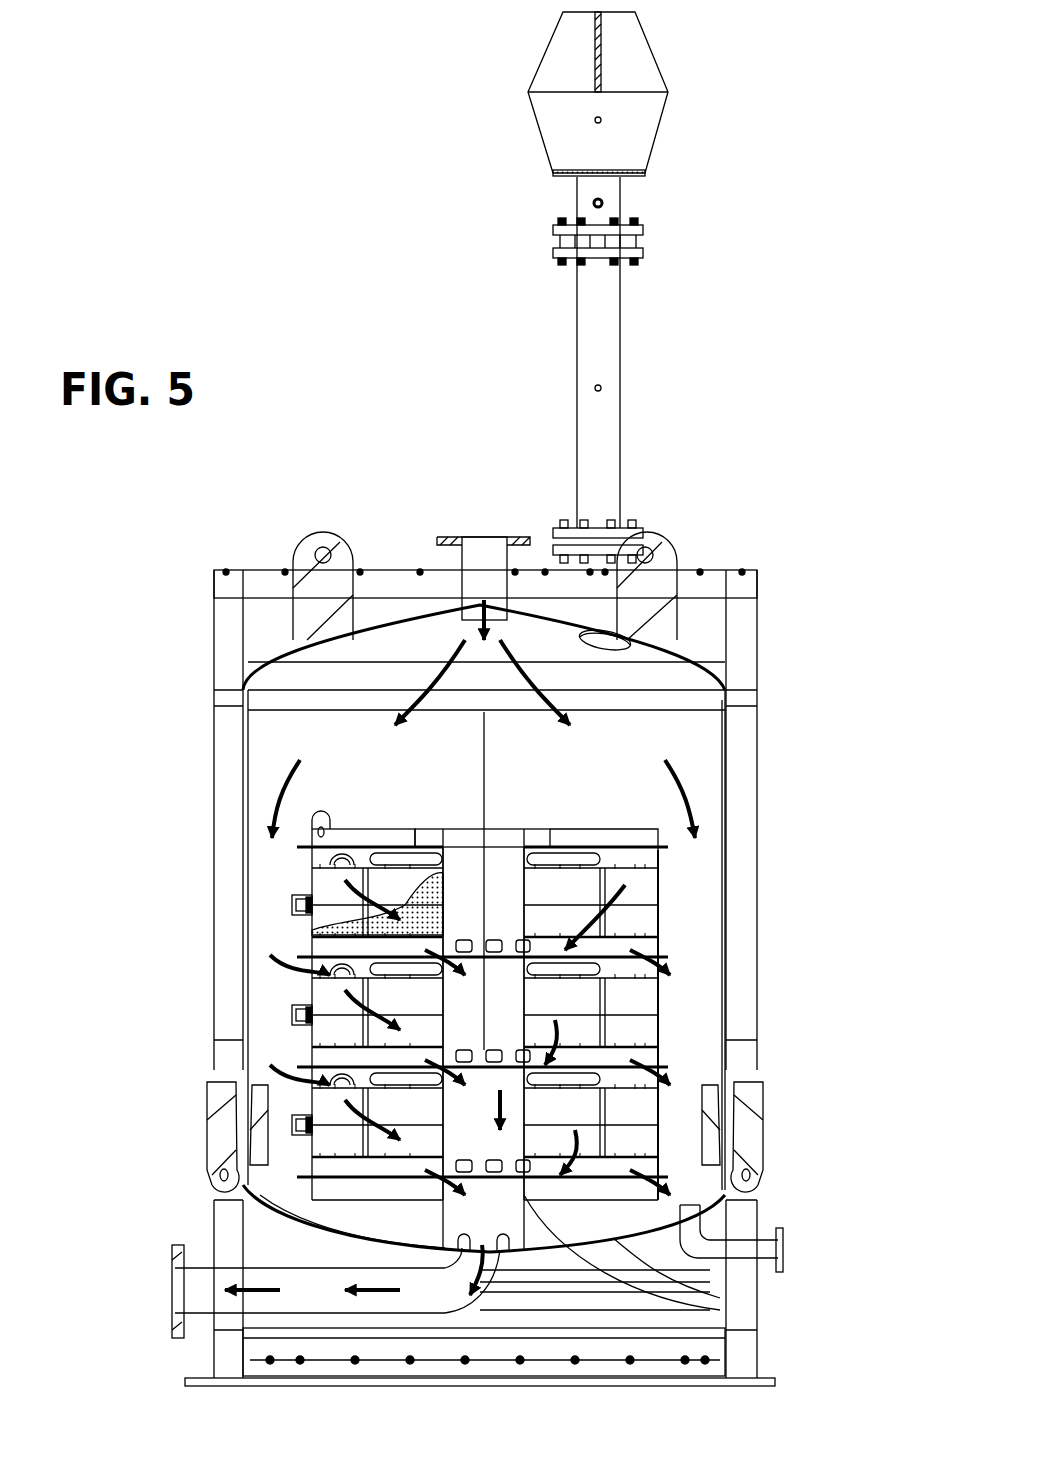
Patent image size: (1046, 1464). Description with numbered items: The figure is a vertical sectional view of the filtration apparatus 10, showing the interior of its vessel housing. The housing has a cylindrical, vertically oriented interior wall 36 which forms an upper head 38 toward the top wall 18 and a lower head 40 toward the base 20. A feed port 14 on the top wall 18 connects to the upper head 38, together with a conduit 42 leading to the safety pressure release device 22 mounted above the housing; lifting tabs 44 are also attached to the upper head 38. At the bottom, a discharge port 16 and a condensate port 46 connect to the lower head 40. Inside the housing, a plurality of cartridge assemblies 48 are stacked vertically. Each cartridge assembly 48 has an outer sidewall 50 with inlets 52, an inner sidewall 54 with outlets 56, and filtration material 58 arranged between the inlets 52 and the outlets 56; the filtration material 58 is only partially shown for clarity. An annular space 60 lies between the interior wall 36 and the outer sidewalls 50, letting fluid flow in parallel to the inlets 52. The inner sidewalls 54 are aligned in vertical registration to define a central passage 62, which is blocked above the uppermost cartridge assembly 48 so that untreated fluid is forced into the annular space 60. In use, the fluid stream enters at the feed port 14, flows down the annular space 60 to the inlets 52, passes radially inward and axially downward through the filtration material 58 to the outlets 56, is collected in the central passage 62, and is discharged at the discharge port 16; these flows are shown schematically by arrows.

The filtration apparatus 10 is at (135, 108).
The safety pressure release device 22 is at (560, 60).
The conduit 42 is at (580, 335).
The lifting tabs 44 is at (315, 535).
The upper head 38 is at (400, 612).
The feed port 14 is at (510, 535).
The top wall 18 is at (700, 570).
The interior wall 36 is at (728, 752).
The inlets 52 is at (347, 851).
The filtration material 58 is at (352, 912).
The outer sidewall 50 is at (660, 915).
The cartridge assemblies 48 is at (672, 836).
The inner sidewall 54 is at (510, 940).
The outlets 56 is at (462, 940).
The central passage 62 is at (504, 1024).
The annular space 60 is at (265, 985).
The lower head 40 is at (710, 1292).
The discharge port 16 is at (178, 1252).
The condensate port 46 is at (785, 1240).
The base 20 is at (760, 1375).